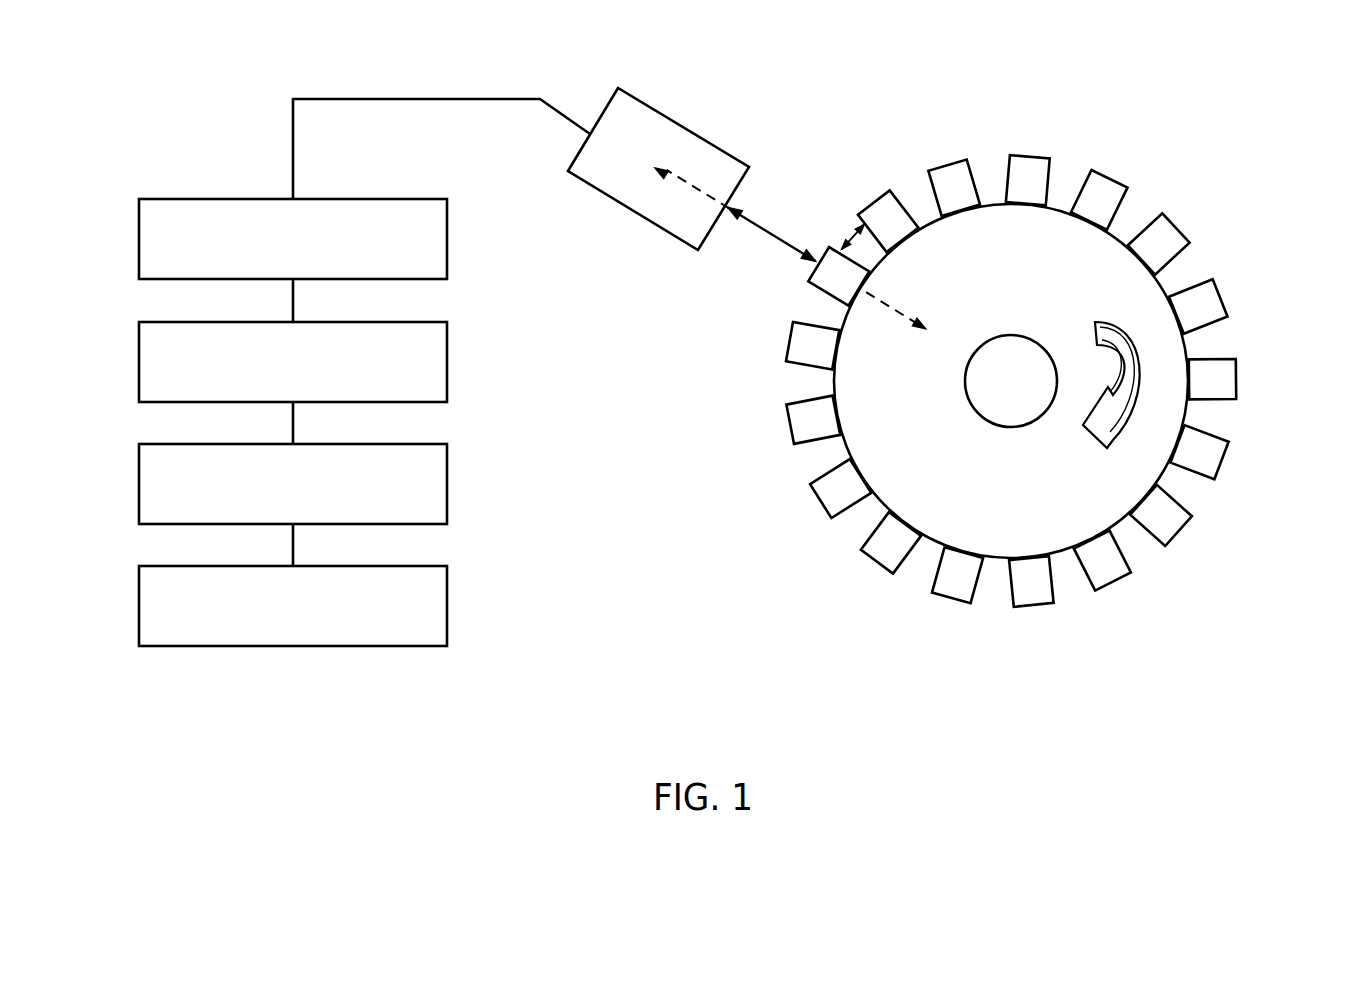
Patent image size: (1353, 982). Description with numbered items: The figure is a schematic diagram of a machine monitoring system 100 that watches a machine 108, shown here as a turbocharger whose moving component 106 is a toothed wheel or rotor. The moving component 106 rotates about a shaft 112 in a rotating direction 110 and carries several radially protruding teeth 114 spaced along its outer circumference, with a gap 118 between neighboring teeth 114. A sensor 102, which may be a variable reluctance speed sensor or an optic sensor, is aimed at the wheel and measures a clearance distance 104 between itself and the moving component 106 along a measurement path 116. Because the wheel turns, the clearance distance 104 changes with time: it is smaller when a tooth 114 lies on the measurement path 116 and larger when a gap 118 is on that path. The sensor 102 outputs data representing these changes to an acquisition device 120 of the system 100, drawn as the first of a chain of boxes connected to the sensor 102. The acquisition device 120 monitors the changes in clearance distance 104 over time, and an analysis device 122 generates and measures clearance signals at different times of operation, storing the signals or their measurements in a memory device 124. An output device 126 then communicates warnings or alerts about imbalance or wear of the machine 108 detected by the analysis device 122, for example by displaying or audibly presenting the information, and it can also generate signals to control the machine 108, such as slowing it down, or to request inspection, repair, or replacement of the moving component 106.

The machine monitoring system 100 is at (758, 662).
The sensor 102 is at (682, 125).
The clearance distance 104 is at (768, 241).
The moving component 106 is at (987, 232).
The machine 108 is at (1242, 662).
The rotating direction 110 is at (1140, 387).
The shaft 112 is at (1010, 335).
The teeth 114 is at (1112, 577).
The measurement path 116 is at (893, 307).
The gap 118 is at (838, 252).
The acquisition device 120 is at (447, 239).
The analysis device 122 is at (447, 362).
The memory device 124 is at (447, 484).
The output device 126 is at (447, 606).